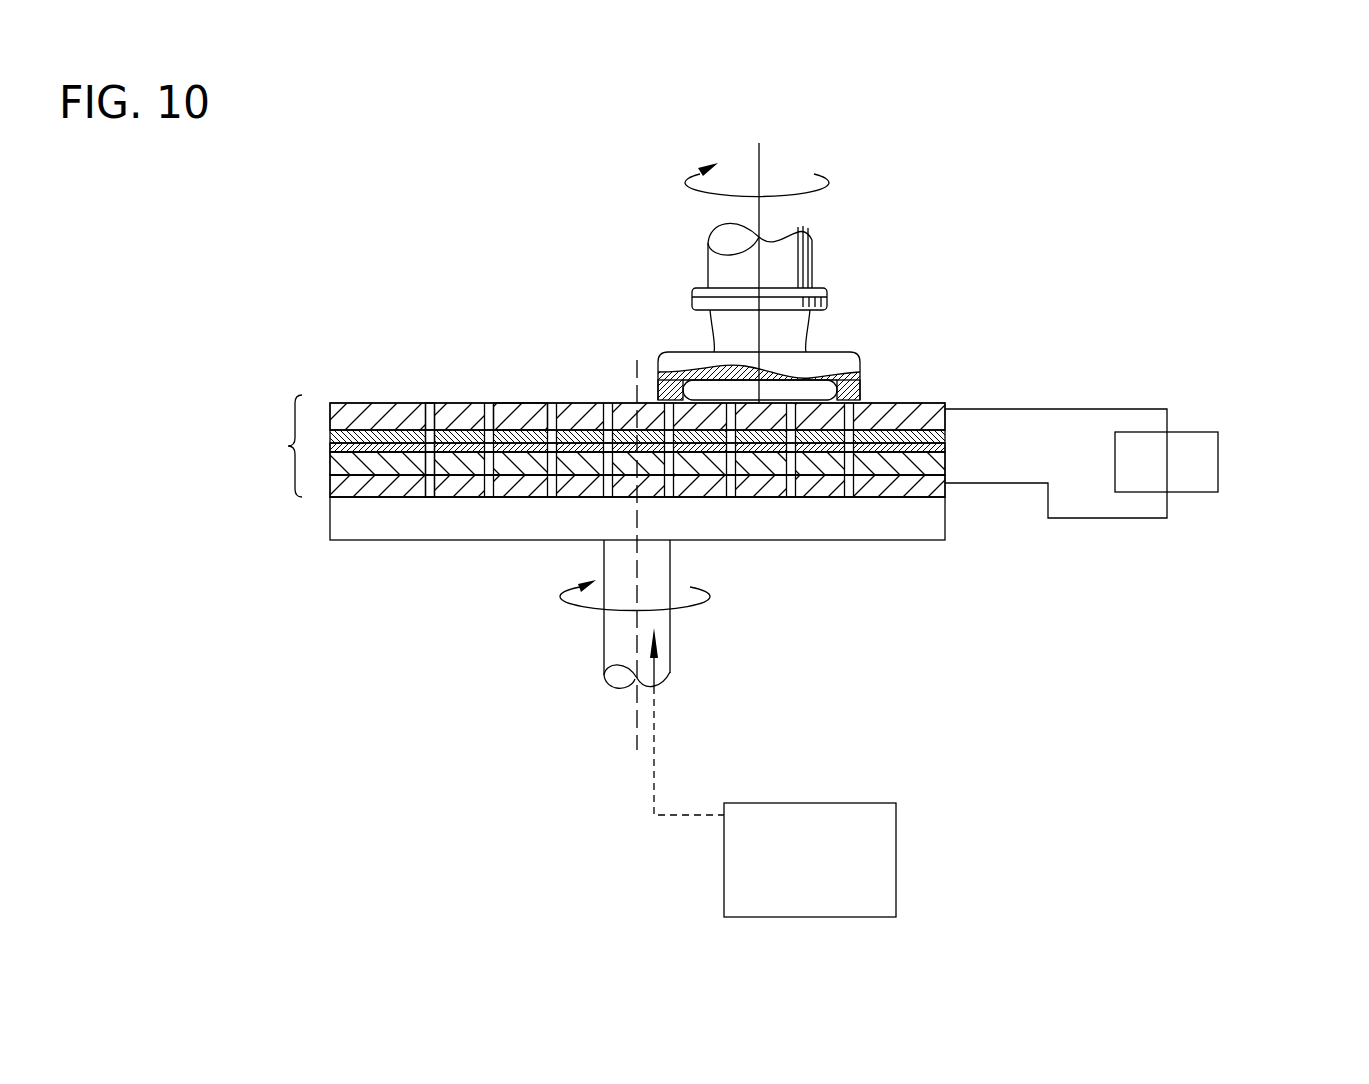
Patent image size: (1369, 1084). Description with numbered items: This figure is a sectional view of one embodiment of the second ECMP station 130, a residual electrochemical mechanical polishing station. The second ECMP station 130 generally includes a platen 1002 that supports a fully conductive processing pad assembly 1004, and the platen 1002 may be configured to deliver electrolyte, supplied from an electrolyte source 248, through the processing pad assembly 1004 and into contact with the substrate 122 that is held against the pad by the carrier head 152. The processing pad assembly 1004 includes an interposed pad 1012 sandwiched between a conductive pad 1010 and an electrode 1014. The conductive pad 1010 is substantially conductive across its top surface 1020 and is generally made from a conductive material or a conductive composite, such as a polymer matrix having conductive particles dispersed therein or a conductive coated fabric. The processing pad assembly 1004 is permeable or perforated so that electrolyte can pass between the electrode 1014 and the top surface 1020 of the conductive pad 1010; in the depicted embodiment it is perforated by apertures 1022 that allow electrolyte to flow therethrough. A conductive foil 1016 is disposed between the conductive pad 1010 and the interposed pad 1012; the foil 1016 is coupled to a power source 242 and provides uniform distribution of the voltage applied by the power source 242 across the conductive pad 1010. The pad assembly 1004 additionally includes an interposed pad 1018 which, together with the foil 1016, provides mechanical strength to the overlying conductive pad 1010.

The second ECMP station 130 is at (870, 273).
The carrier head 152 is at (842, 345).
The substrate 122 is at (797, 383).
The conductive pad 1010 is at (893, 408).
The processing pad assembly 1004 is at (257, 446).
The apertures 1022 is at (430, 403).
The top surface 1020 is at (520, 403).
The conductive foil 1016 is at (945, 425).
The interposed pad 1018 is at (330, 457).
The interposed pad 1012 is at (945, 468).
The electrode 1014 is at (945, 487).
The platen 1002 is at (330, 522).
The power source 242 is at (1218, 462).
The electrolyte source 248 is at (896, 832).